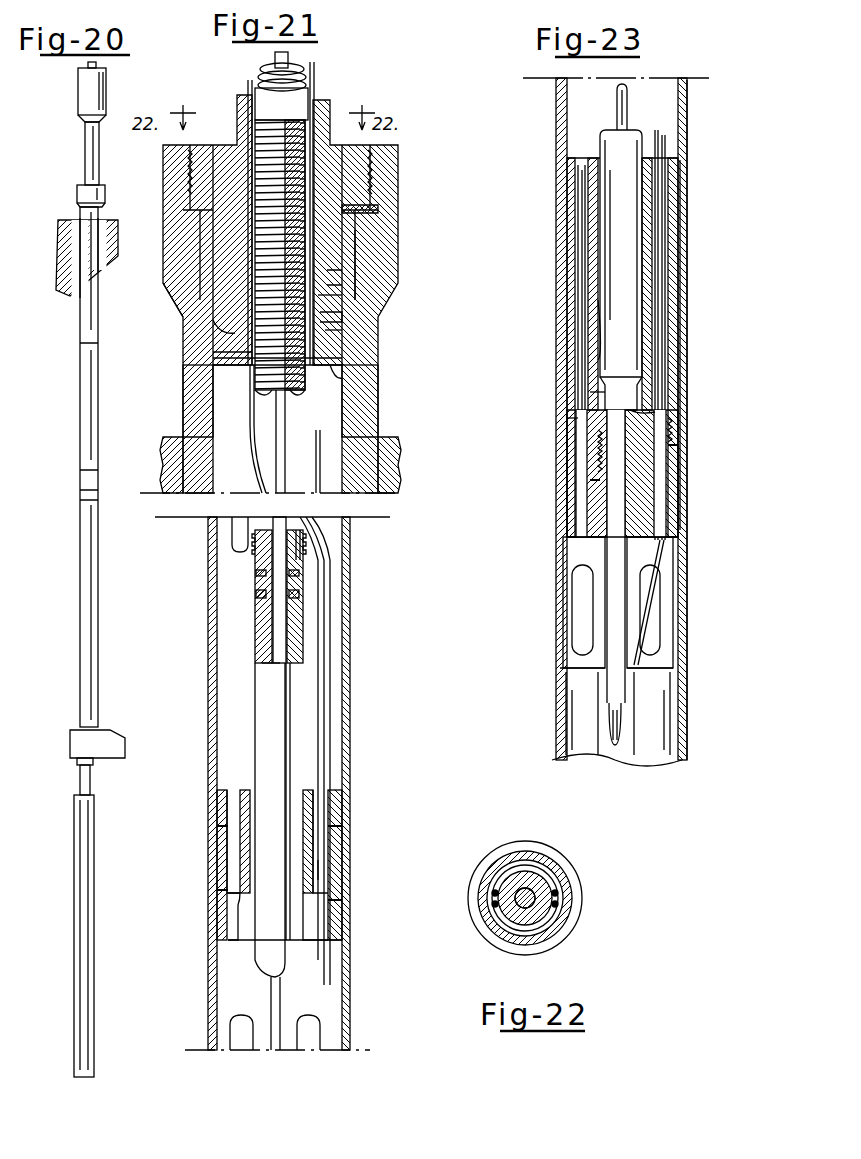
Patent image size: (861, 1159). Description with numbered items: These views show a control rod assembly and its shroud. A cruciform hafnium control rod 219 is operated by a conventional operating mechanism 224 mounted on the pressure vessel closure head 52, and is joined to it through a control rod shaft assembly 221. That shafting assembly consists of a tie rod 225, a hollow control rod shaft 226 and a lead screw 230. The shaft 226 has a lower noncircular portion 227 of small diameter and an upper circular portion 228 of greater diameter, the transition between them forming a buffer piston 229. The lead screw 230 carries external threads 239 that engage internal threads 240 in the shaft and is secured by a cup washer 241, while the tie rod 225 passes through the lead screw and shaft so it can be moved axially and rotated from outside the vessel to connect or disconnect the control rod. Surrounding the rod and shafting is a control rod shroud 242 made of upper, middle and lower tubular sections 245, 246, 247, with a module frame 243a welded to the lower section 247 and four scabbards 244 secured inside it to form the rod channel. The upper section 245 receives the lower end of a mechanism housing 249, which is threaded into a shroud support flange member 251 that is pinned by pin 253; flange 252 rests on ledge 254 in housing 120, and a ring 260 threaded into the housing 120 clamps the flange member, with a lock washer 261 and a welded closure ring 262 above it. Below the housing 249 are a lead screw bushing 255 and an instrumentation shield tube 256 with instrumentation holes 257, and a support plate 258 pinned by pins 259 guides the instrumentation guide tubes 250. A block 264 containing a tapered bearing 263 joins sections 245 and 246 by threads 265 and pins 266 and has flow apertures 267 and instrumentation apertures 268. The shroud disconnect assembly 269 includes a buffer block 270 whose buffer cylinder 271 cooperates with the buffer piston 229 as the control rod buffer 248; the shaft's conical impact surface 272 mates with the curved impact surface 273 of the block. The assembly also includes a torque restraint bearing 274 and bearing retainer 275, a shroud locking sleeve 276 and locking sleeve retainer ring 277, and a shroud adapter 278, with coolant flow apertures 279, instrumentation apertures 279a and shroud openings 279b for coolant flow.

In FIG. 20, the pressure vessel closure head 52 is at (68, 240).
In FIG. 21, the pressure vessel closure head 52 is at (392, 452).
In FIG. 20, the housing 120 is at (78, 196).
In FIG. 21, the housing 120 is at (385, 185).
In FIG. 20, the control rod 219 is at (78, 985).
In FIG. 23, the control rod shaft assembly 221 is at (628, 700).
In FIG. 20, the operating mechanism 224 is at (83, 88).
In FIG. 21, the tie rod 225 is at (272, 1042).
In FIG. 23, the tie rod 225 is at (626, 105).
In FIG. 22, the tie rod 225 is at (522, 906).
In FIG. 21, the control rod shaft 226 is at (258, 690).
In FIG. 23, the control rod shaft 226 is at (620, 210).
In FIG. 23, the lower noncircular portion 227 is at (612, 690).
In FIG. 21, the upper circular portion 228 is at (258, 709).
In FIG. 23, the upper circular portion 228 is at (612, 138).
In FIG. 23, the buffer piston 229 is at (640, 378).
In FIG. 21, the lead screw 230 is at (304, 552).
In FIG. 22, the lead screw 230 is at (536, 888).
In FIG. 21, the external threads 239 is at (305, 600).
In FIG. 21, the internal threads 240 is at (256, 596).
In FIG. 21, the cup washer 241 is at (256, 573).
In FIG. 20, the control rod shroud 242 is at (77, 614).
In FIG. 21, the control rod shroud 242 is at (352, 630).
In FIG. 20, the module frame 243a is at (80, 742).
In FIG. 23, the scabbard 244 is at (582, 718).
In FIG. 21, the upper tubular section 245 is at (357, 410).
In FIG. 21, the middle tubular section 246 is at (352, 1000).
In FIG. 23, the middle tubular section 246 is at (556, 110).
In FIG. 23, the lower tubular section 247 is at (687, 730).
In FIG. 23, the buffer 248 is at (579, 406).
In FIG. 20, the mechanism housing 249 is at (86, 157).
In FIG. 21, the mechanism housing 249 is at (242, 118).
In FIG. 22, the mechanism housing 249 is at (532, 862).
In FIG. 23, the instrumentation guide tubes 250 is at (663, 148).
In FIG. 22, the instrumentation guide tubes 250 is at (560, 906).
In FIG. 21, the shroud support flange member 251 is at (344, 277).
In FIG. 21, the flange 252 is at (186, 289).
In FIG. 23, the flange 252 is at (687, 582).
In FIG. 21, the pin 253 is at (342, 318).
In FIG. 21, the ledge 254 is at (330, 295).
In FIG. 21, the lead screw bushing 255 is at (344, 335).
In FIG. 21, the instrumentation shield tube 256 is at (306, 230).
In FIG. 22, the instrumentation shield tube 256 is at (560, 921).
In FIG. 21, the instrumentation holes 257 is at (222, 320).
In FIG. 22, the instrumentation holes 257 is at (497, 910).
In FIG. 21, the support plate 258 is at (352, 377).
In FIG. 21, the pins 259 is at (332, 357).
In FIG. 21, the ring 260 is at (352, 255).
In FIG. 21, the lock washer 261 is at (344, 212).
In FIG. 21, the closure ring 262 is at (362, 165).
In FIG. 21, the tapered bearing 263 is at (246, 800).
In FIG. 21, the block 264 is at (352, 868).
In FIG. 21, the threads 265 is at (340, 830).
In FIG. 21, the pins 266 is at (218, 830).
In FIG. 21, the flow apertures 267 is at (232, 868).
In FIG. 21, the instrumentation apertures 268 is at (324, 880).
In FIG. 23, the shroud disconnect assembly 269 is at (686, 282).
In FIG. 23, the buffer block 270 is at (602, 378).
In FIG. 23, the buffer cylinder 271 is at (604, 355).
In FIG. 23, the impact surface 272 is at (592, 392).
In FIG. 23, the impact surface 273 is at (656, 412).
In FIG. 23, the torque restraint bearing 274 is at (592, 463).
In FIG. 23, the bearing retainer 275 is at (596, 478).
In FIG. 23, the shroud locking sleeve 276 is at (672, 425).
In FIG. 23, the locking sleeve retainer ring 277 is at (676, 448).
In FIG. 23, the shroud adapter 278 is at (667, 517).
In FIG. 23, the coolant flow apertures 279 is at (578, 303).
In FIG. 23, the instrumentation apertures 279a is at (666, 318).
In FIG. 23, the openings 279b is at (657, 632).